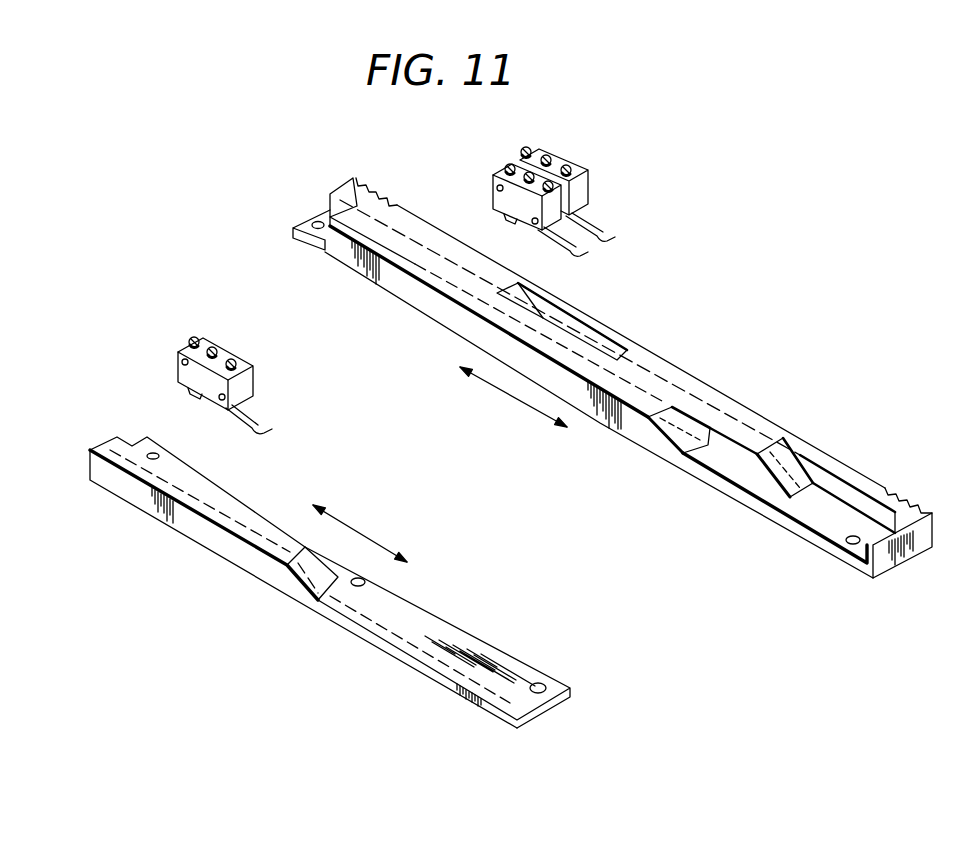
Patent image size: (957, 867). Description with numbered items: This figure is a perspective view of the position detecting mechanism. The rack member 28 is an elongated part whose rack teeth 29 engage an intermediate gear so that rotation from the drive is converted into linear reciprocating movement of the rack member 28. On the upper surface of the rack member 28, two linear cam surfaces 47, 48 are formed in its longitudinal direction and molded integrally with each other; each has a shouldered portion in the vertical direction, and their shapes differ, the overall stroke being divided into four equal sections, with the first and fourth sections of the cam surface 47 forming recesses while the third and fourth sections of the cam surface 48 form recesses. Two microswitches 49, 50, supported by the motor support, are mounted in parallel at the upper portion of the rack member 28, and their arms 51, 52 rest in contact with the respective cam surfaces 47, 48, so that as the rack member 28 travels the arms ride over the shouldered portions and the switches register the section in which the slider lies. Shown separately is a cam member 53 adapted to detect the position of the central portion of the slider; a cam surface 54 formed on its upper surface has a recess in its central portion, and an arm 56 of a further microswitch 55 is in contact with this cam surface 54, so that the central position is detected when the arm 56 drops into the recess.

The rack member 28 is at (418, 214).
The rack teeth 29 is at (897, 488).
The cam surface 47 is at (702, 402).
The cam surface 48 is at (707, 475).
The microswitch 49 is at (572, 160).
The microswitch 50 is at (493, 178).
The arm 51 is at (600, 230).
The arm 52 is at (582, 254).
The cam member 53 is at (500, 645).
The cam surface 54 is at (453, 672).
The microswitch 55 is at (229, 352).
The arm 56 is at (260, 416).